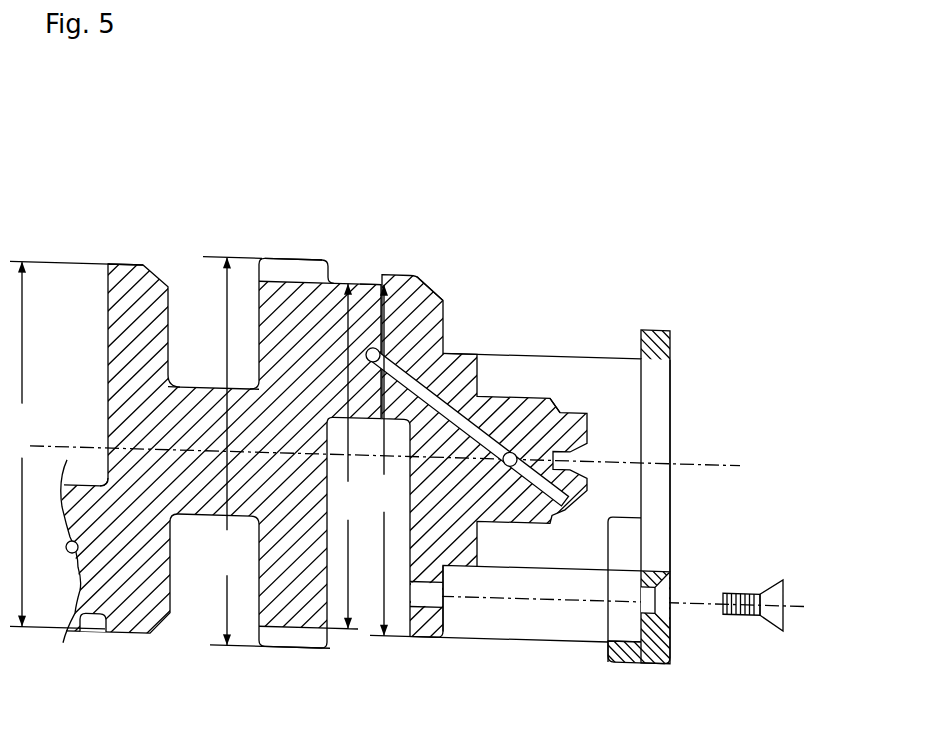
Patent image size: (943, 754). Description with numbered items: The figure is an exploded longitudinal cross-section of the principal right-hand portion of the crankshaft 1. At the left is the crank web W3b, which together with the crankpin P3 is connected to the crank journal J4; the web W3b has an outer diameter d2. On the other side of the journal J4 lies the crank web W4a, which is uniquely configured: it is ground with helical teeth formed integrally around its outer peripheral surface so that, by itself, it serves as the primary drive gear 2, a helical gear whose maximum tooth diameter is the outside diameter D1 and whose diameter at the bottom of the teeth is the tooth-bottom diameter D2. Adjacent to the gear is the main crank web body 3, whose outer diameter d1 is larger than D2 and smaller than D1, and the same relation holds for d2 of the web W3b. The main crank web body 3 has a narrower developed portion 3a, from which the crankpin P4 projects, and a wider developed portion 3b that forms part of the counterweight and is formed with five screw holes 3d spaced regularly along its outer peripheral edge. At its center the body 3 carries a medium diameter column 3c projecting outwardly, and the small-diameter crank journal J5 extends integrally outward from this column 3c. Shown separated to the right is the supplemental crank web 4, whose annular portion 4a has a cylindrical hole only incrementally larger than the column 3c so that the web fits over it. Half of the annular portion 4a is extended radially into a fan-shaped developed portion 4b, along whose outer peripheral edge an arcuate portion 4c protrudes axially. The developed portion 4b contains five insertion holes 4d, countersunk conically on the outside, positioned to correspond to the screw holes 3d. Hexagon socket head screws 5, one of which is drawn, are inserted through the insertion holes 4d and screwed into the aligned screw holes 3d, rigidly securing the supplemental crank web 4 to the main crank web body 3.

The crankshaft 1 is at (234, 150).
The primary drive gear 2 is at (298, 642).
The main crank web body 3 is at (424, 266).
The narrower developed portion 3a is at (447, 290).
The wider developed portion 3b is at (446, 607).
The medium diameter column 3c is at (466, 341).
The screw holes 3d is at (432, 580).
The supplemental crank web 4 is at (660, 313).
The annular portion 4a is at (672, 373).
The developed portion 4b is at (672, 621).
The arcuate portion 4c is at (608, 536).
The insertion holes 4d is at (660, 578).
The hexagon socket head screws 5 is at (786, 578).
The crank journal J4 is at (196, 378).
The crank journal J5 is at (528, 381).
The crankpin P3 is at (78, 478).
The crankpin P4 is at (370, 276).
The crank web W3b is at (126, 245).
The crank web W4a is at (287, 237).
The outer diameter of main crank web body d1 is at (379, 460).
The outer diameter of crank web W3b d2 is at (57, 445).
The outside diameter of helical teeth D1 is at (266, 453).
The tooth-bottom diameter D2 is at (346, 456).